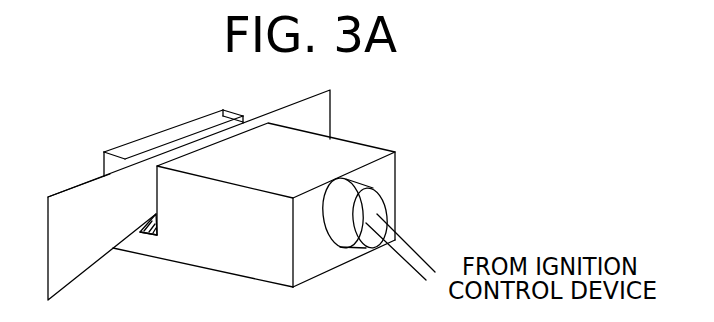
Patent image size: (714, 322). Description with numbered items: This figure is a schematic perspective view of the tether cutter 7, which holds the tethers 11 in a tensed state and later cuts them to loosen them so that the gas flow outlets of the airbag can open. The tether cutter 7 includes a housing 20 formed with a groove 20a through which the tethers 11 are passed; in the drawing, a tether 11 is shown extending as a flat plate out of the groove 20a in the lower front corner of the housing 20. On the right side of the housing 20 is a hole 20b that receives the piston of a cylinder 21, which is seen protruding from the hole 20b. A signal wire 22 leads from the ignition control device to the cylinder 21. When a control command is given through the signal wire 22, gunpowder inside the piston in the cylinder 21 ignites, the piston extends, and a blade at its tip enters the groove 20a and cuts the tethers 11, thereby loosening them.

The tether cutter 7 is at (362, 126).
The tether 11 is at (78, 186).
The housing 20 is at (207, 270).
The groove 20a is at (143, 237).
The hole 20b is at (345, 253).
The cylinder 21 is at (374, 190).
The signal wire 22 is at (404, 238).